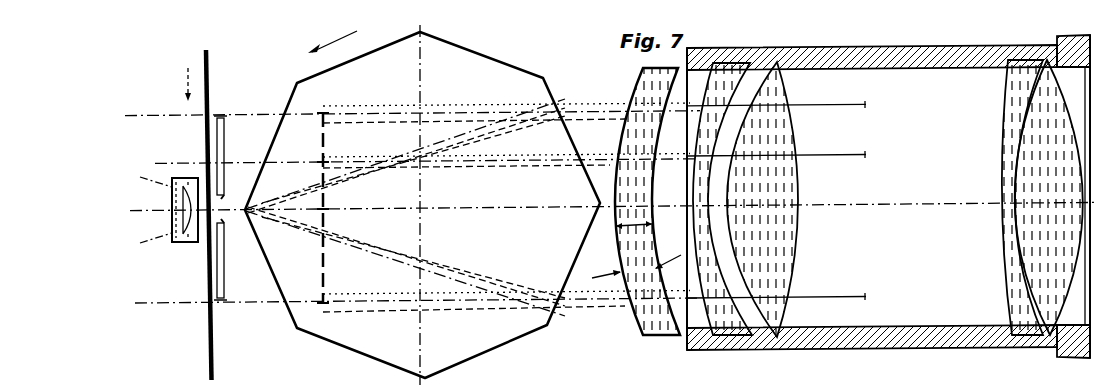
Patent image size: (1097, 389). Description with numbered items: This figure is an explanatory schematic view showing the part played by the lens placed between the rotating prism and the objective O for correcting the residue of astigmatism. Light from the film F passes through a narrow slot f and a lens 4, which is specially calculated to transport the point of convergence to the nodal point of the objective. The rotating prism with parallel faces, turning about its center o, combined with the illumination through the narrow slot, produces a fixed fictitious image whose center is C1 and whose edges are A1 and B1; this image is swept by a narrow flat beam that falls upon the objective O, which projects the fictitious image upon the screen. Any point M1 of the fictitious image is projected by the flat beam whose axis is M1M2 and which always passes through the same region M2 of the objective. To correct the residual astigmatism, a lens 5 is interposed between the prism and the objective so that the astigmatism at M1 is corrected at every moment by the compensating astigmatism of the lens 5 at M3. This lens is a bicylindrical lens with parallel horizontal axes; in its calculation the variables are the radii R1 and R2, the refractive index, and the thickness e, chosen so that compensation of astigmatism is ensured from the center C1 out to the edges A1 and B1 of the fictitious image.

The film F is at (211, 75).
The slit f is at (226, 198).
The lens 4 is at (178, 241).
The lens 5 is at (632, 120).
The octagonal prism drum center o is at (422, 205).
The edge of the fictitious image A1 is at (317, 107).
The point of the fictitious image M1 is at (316, 158).
The center of the fictitious image C1 is at (317, 209).
The edge of the fictitious image B1 is at (317, 299).
The point of the lens M3 is at (638, 148).
The region of the objective M2 is at (680, 148).
The thickness of the lens e is at (634, 219).
The radius of the lens R2 is at (606, 268).
The radius of the lens R1 is at (668, 257).
The objective O is at (888, 196).